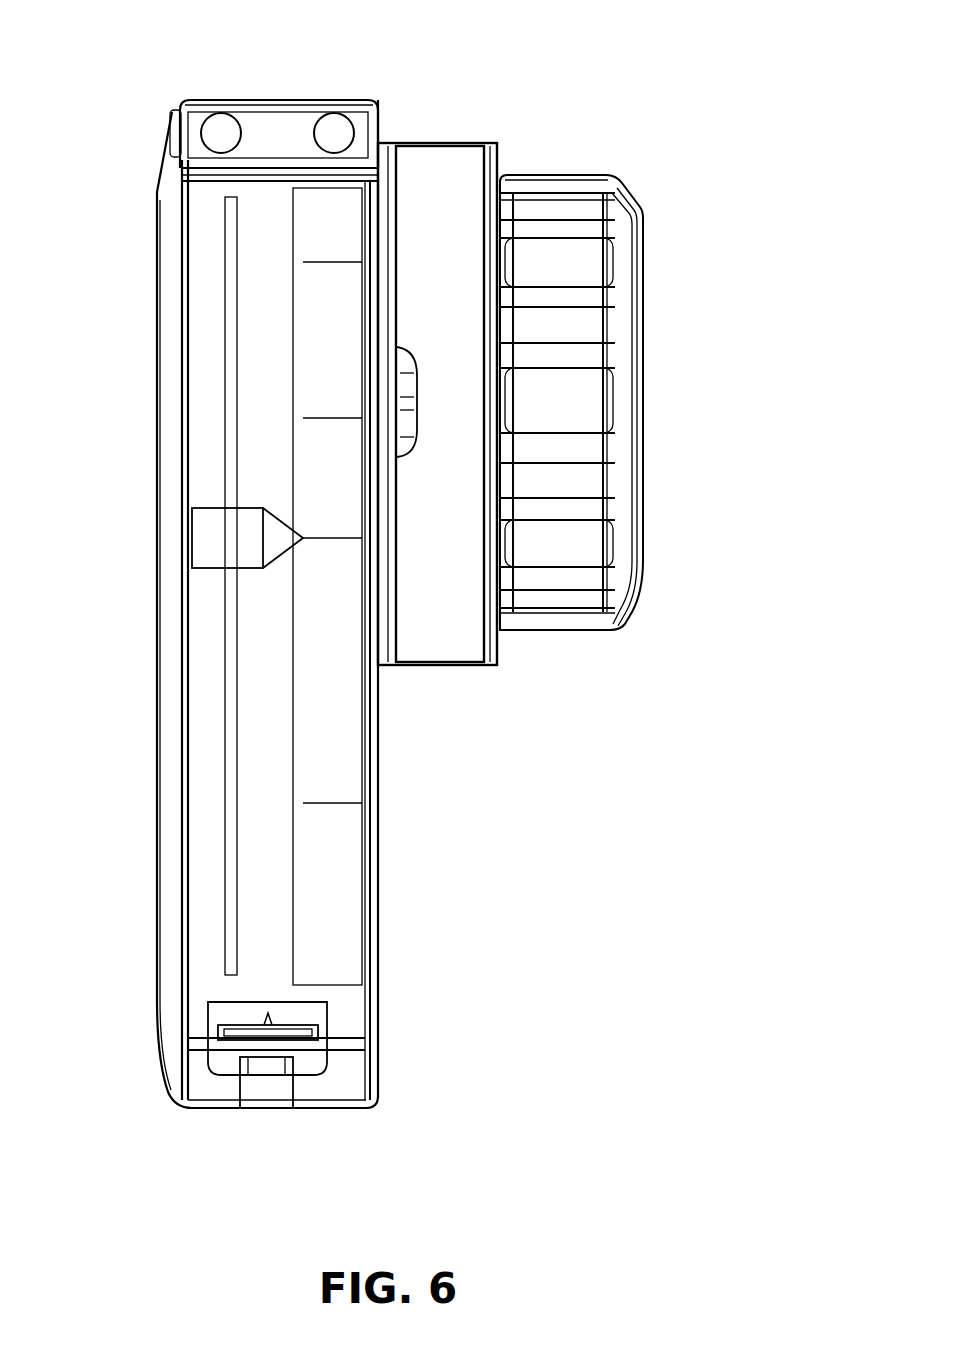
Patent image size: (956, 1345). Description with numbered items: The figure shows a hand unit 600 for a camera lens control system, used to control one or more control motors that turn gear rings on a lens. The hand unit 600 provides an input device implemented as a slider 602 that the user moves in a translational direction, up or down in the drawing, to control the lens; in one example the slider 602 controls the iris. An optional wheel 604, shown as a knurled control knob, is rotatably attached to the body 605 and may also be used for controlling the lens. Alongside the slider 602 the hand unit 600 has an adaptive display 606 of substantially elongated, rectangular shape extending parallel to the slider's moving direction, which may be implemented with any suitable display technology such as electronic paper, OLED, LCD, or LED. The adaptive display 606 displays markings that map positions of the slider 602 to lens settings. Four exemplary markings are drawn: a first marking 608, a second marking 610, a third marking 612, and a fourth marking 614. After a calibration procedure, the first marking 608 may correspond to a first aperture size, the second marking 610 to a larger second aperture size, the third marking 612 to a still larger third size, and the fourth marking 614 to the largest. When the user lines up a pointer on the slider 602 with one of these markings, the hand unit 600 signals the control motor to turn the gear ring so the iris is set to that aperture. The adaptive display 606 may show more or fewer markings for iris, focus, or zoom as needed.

The hand unit 600 is at (730, 82).
The slider 602 is at (215, 568).
The wheel 604 is at (556, 177).
The body 605 is at (282, 100).
The adaptive display 606 is at (379, 599).
The first marking 608 is at (332, 250).
The second marking 610 is at (332, 406).
The third marking 612 is at (332, 526).
The fourth marking 614 is at (332, 791).